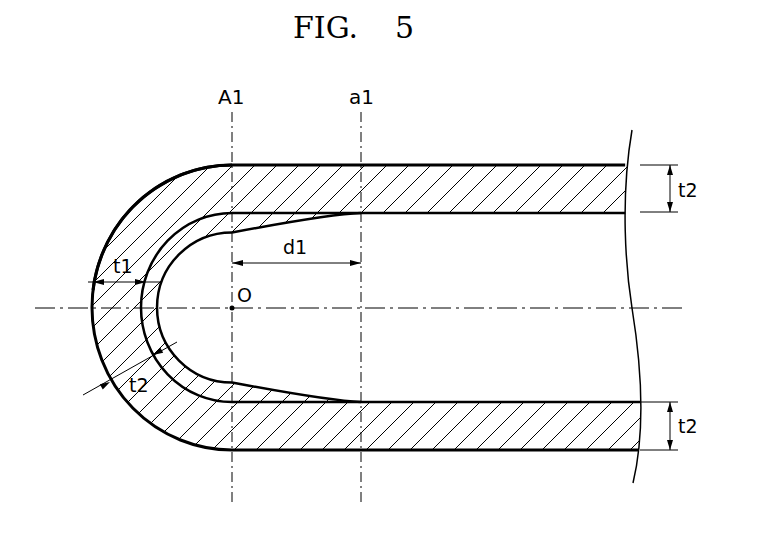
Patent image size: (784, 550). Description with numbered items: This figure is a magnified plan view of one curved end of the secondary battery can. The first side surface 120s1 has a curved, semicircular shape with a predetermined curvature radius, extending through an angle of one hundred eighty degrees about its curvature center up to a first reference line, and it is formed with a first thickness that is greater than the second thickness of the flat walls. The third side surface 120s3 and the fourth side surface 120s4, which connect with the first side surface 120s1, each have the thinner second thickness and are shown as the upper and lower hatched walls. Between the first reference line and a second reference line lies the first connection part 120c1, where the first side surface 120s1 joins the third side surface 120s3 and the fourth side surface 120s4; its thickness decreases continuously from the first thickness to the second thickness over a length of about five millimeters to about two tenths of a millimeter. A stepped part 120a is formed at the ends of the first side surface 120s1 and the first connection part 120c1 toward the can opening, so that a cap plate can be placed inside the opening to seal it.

The stepped part 120a is at (99, 351).
The first side surface 120s1 is at (140, 228).
The first connection part 120c1 is at (294, 178).
The fourth side surface 120s4 is at (497, 178).
The third side surface 120s3 is at (495, 433).